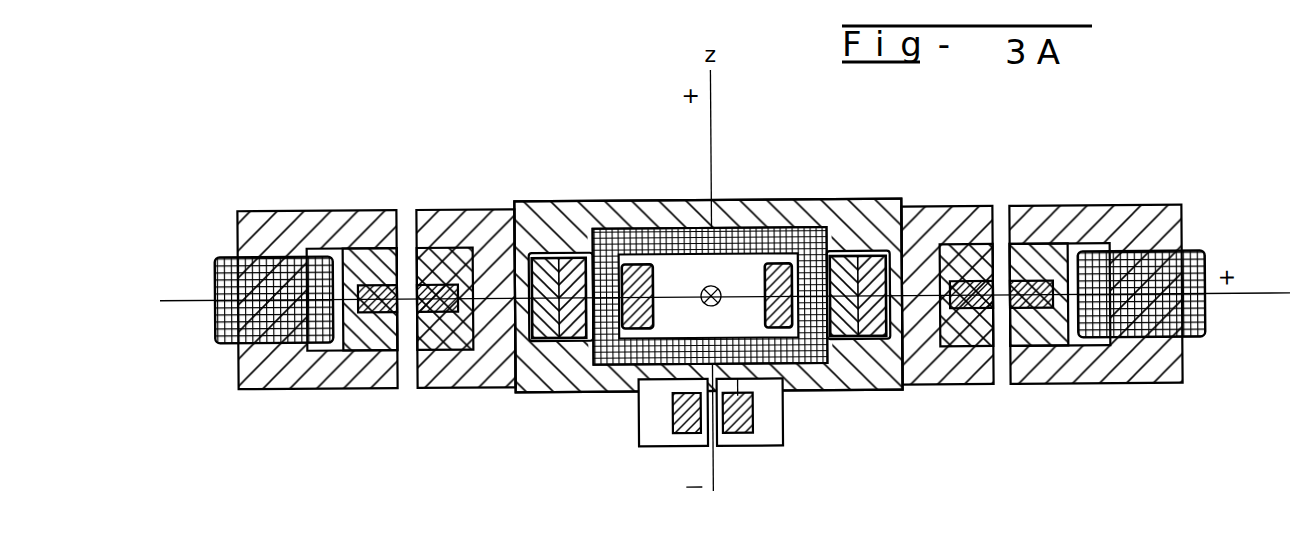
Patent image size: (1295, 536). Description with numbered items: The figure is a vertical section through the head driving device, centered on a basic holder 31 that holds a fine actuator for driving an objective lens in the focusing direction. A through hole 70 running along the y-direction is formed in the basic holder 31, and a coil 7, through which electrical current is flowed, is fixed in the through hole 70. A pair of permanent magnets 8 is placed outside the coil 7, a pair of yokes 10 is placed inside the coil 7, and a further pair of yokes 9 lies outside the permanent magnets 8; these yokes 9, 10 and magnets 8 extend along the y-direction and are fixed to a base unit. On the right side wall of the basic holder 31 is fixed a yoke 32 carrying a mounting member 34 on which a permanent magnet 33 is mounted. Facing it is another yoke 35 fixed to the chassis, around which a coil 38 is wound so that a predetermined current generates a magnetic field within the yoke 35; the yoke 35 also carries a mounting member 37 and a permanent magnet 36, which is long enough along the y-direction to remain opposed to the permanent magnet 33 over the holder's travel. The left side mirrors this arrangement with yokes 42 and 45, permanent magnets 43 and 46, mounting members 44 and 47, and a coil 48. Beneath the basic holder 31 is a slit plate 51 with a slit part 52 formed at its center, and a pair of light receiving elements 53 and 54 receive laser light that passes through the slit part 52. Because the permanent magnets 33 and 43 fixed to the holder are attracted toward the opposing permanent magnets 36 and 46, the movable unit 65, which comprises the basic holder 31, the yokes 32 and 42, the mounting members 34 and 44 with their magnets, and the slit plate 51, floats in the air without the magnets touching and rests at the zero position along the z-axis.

The coil 7 is at (710, 251).
The permanent magnet 8 is at (707, 349).
The yoke 9 is at (685, 352).
The yoke 10 is at (720, 222).
The basic holder 31 is at (708, 251).
The yoke 32 is at (947, 263).
The permanent magnet 33 is at (972, 358).
The mounting member 34 is at (943, 345).
The yoke 35 is at (1096, 321).
The permanent magnet 36 is at (1041, 358).
The mounting member 37 is at (1038, 246).
The coil 38 is at (1167, 320).
The yoke 42 is at (466, 270).
The permanent magnet 43 is at (432, 367).
The mounting member 44 is at (441, 242).
The yoke 45 is at (317, 330).
The permanent magnet 46 is at (360, 235).
The mounting member 47 is at (363, 347).
The coil 48 is at (247, 318).
The slit plate 51 is at (739, 347).
The slit part 52 is at (642, 443).
The light receiving element 53 is at (758, 433).
The light receiving element 54 is at (642, 413).
The movable unit 65 is at (708, 253).
The through hole 70 is at (710, 251).